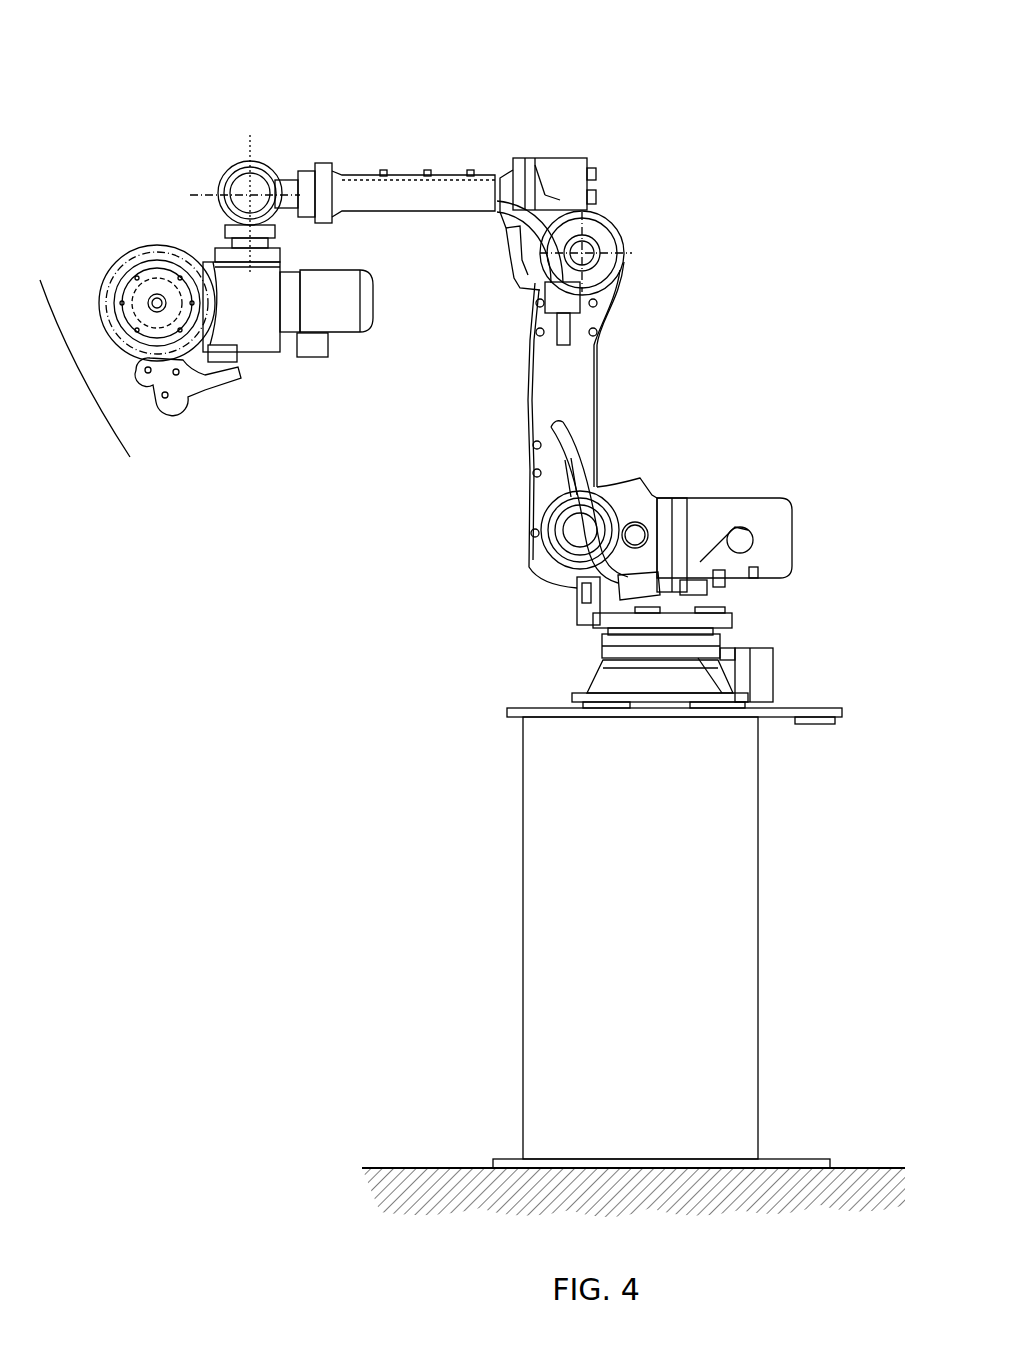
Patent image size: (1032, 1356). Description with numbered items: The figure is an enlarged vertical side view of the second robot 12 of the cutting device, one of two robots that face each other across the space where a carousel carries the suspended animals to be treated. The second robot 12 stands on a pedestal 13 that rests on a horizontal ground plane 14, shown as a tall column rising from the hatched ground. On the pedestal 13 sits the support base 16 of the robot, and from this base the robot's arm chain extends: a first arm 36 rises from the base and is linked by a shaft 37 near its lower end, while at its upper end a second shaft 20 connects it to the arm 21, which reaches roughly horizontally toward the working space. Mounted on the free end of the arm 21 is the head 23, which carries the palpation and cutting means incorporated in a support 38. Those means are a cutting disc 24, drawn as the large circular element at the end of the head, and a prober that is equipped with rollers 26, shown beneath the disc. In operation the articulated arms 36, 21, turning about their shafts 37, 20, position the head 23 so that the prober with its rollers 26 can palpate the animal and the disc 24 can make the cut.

The second robot 12 is at (450, 366).
The pedestal 13 is at (665, 950).
The ground plane 14 is at (407, 1178).
The support base 16 is at (727, 645).
The shaft 20 is at (597, 243).
The arm 21 is at (437, 197).
The probe cutter head 23 is at (85, 368).
The disc 24 is at (137, 263).
The rollers 26 is at (165, 408).
The arm 36 is at (597, 380).
The shaft 37 is at (625, 490).
The support 38 is at (217, 262).